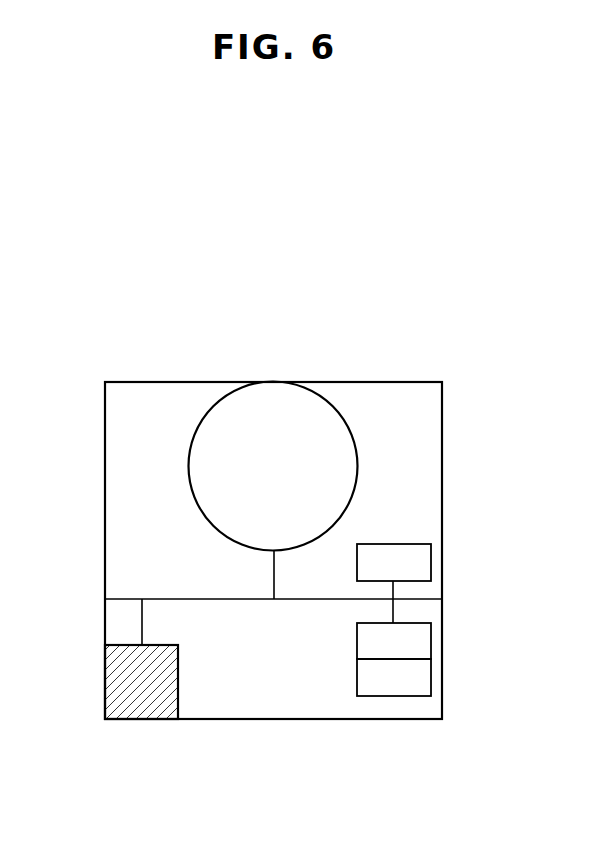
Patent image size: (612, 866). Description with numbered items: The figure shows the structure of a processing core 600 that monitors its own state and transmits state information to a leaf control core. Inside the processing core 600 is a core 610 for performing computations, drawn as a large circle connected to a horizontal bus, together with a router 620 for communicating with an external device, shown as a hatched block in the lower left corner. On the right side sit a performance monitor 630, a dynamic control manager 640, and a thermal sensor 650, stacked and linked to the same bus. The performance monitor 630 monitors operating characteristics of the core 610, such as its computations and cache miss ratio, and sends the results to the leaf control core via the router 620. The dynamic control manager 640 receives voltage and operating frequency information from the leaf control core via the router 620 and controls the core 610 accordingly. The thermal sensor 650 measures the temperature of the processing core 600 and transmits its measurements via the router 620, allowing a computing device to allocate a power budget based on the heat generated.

The processing core 600 is at (443, 300).
The core 610 is at (274, 382).
The router 620 is at (117, 678).
The performance monitor 630 is at (421, 562).
The dynamic control manager 640 is at (421, 641).
The thermal sensor 650 is at (421, 677).